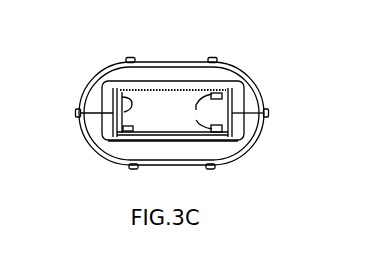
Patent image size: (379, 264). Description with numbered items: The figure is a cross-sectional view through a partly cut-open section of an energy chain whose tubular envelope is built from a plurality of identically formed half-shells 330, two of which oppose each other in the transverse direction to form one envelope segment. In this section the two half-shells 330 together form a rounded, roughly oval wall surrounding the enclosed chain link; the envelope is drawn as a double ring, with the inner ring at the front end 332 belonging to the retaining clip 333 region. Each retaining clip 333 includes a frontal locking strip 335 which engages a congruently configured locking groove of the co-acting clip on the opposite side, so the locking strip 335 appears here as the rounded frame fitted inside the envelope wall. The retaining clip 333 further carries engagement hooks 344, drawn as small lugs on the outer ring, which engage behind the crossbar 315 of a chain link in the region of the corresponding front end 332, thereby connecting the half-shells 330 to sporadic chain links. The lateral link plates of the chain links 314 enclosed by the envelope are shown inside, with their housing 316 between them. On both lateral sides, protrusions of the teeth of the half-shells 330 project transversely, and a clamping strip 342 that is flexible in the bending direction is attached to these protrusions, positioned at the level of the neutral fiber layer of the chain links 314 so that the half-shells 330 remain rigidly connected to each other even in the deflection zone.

The half-shell 330 is at (80, 98).
The retaining clip 333 is at (219, 82).
The engagement hooks 344 is at (127, 64).
The front end 332 is at (153, 141).
The locking strip 335 is at (202, 86).
The battery module 316 is at (178, 120).
The chain links 314 is at (110, 128).
The clamping strip 342 is at (77, 113).
The crossbar 315 is at (153, 92).